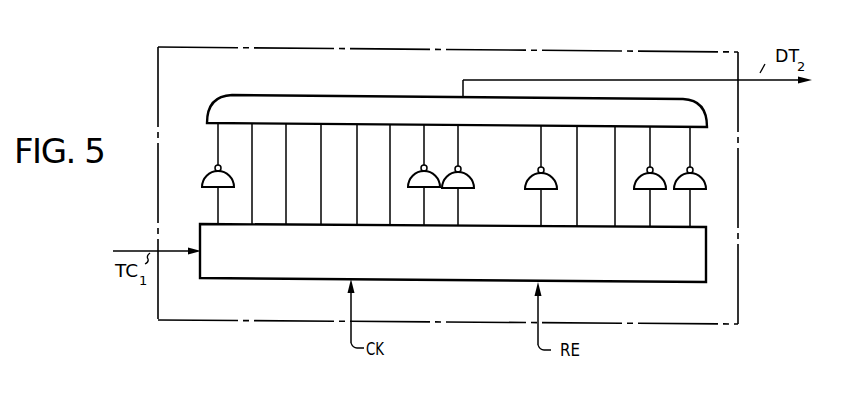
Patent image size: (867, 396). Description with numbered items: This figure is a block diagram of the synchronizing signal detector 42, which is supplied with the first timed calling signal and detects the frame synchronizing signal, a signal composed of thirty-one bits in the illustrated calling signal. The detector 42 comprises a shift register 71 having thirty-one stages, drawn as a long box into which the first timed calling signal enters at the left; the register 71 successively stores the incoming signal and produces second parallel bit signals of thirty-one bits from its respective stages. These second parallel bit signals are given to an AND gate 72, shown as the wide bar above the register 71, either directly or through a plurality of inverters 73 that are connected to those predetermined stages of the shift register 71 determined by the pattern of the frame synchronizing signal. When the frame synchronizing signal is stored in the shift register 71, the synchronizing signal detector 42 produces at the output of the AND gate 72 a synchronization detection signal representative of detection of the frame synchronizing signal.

The synchronizing signal detector 42 is at (738, 212).
The shift register 71 is at (255, 280).
The AND gate 72 is at (303, 94).
The inverters 73 is at (204, 188).